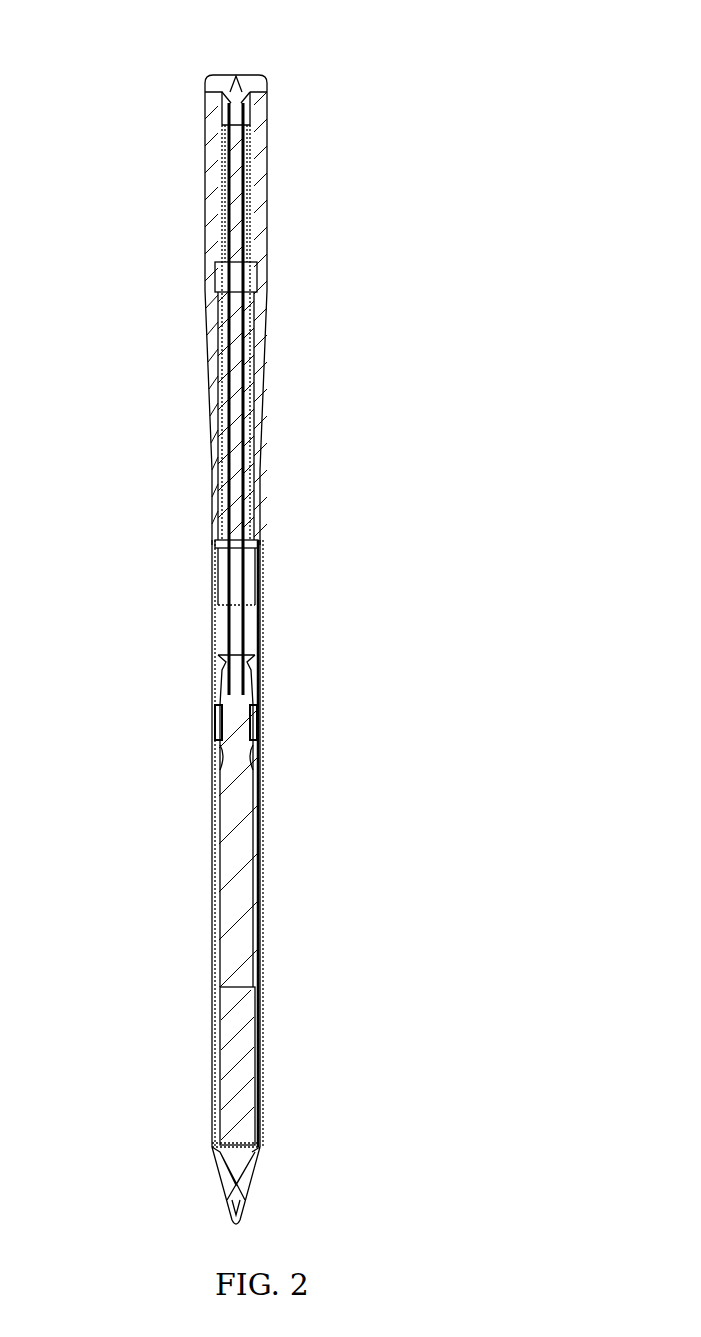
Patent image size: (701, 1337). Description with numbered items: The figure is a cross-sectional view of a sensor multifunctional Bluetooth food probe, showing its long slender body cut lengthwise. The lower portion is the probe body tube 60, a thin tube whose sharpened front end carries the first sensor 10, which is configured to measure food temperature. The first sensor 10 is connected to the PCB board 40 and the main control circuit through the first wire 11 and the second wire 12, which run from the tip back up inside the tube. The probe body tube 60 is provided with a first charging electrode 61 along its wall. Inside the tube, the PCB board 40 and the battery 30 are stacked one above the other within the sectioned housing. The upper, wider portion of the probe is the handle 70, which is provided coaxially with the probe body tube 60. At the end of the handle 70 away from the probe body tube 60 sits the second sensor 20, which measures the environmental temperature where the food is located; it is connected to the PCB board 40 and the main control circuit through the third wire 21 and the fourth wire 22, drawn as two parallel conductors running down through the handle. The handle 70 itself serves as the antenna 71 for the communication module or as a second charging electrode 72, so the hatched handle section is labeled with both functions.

The first sensor 10 is at (250, 1190).
The first wire 11 is at (213, 1152).
The second wire 12 is at (256, 1152).
The second sensor 20 is at (237, 73).
The third wire 21 is at (207, 90).
The fourth wire 22 is at (257, 91).
The battery 30 is at (262, 1030).
The PCB board 40 is at (242, 785).
The probe body tube 60 is at (265, 902).
The first charging electrode 61 is at (262, 843).
The handle 70 is at (260, 248).
The antenna 71 is at (215, 232).
The second charging electrode 72 is at (264, 324).